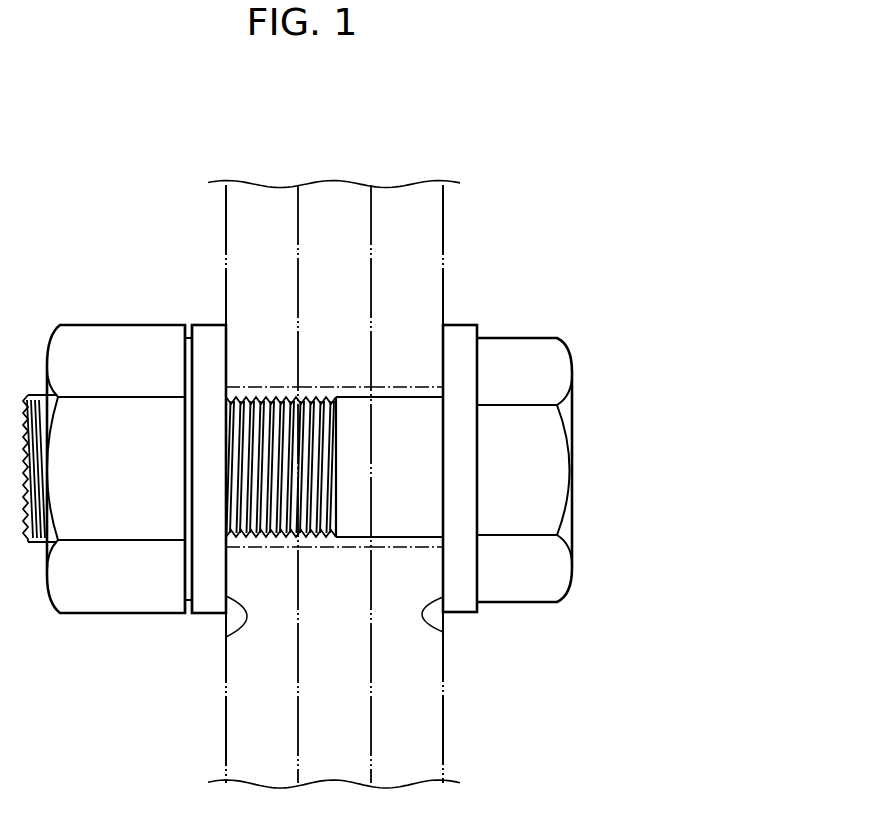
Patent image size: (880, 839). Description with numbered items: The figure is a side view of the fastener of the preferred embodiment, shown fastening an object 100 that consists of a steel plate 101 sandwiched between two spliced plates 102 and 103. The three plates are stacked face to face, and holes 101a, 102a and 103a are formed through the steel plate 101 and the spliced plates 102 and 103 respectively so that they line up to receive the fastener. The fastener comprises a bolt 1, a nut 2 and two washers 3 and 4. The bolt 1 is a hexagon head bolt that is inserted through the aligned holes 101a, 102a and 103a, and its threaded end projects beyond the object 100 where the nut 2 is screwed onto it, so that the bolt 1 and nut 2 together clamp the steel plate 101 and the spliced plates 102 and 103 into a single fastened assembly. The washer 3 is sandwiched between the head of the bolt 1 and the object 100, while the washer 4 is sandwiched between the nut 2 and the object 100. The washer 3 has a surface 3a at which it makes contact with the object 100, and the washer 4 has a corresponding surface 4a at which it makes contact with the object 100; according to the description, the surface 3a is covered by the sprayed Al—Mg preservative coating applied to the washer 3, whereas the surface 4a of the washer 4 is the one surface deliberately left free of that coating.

The bolt 1 is at (519, 345).
The nut 2 is at (120, 337).
The washer 3 is at (463, 333).
The washer 4 is at (210, 333).
The surface 3a is at (443, 632).
The surface 4a is at (226, 637).
The object 100 is at (334, 436).
The steel plate 101 is at (335, 457).
The spliced plate 102 is at (415, 458).
The spliced plate 103 is at (254, 458).
The hole 101a is at (334, 392).
The hole 102a is at (407, 392).
The hole 103a is at (261, 392).